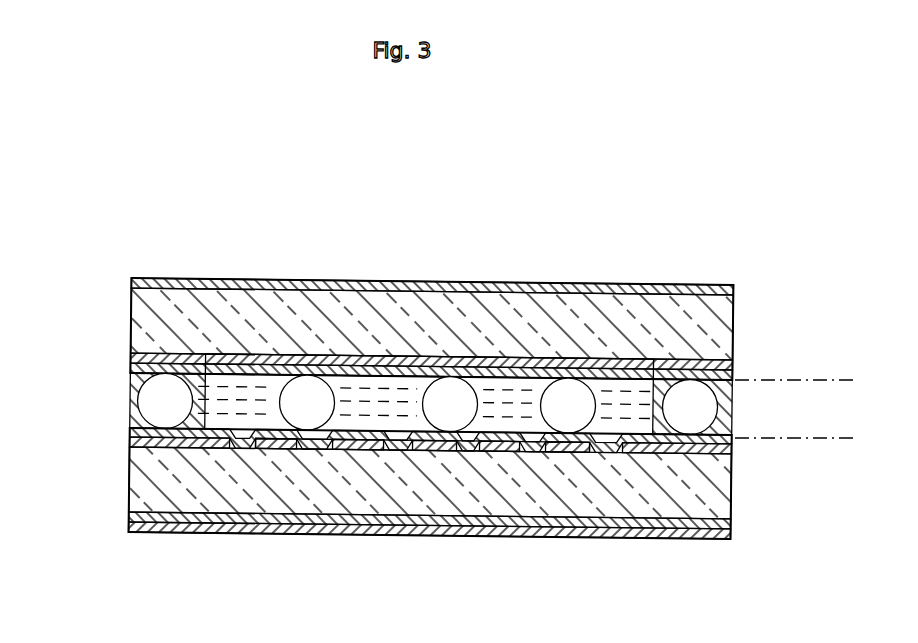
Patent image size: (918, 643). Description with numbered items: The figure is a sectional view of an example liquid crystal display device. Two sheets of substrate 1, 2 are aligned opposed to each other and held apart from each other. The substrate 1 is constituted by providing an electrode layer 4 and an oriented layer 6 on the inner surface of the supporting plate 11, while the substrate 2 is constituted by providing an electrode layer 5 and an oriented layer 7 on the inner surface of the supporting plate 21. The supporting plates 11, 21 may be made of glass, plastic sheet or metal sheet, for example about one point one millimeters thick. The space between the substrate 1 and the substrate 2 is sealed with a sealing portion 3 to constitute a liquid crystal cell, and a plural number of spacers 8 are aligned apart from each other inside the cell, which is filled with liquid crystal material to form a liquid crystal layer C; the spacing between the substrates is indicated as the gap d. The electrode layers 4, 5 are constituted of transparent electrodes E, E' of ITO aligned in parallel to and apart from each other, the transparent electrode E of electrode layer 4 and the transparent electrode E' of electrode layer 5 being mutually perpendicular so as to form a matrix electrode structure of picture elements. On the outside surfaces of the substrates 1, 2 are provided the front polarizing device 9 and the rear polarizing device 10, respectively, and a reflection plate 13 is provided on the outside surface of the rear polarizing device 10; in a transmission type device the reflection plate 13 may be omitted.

The substrate 1 is at (121, 360).
The substrate 2 is at (116, 535).
The sealing portion 3 is at (130, 382).
The electrode layer 4 is at (216, 360).
The electrode layer 5 is at (215, 445).
The oriented layer 6 is at (275, 368).
The oriented layer 7 is at (250, 436).
The spacers 8 is at (150, 404).
The front polarizing device 9 is at (510, 288).
The rear polarizing device 10 is at (575, 522).
The supporting plate 11 is at (700, 332).
The reflection plate 13 is at (695, 535).
The supporting plate 21 is at (705, 487).
The transparent electrode E is at (429, 304).
The transparent electrode E' is at (423, 525).
The liquid crystal layer C is at (628, 398).
The cell gap d is at (838, 358).